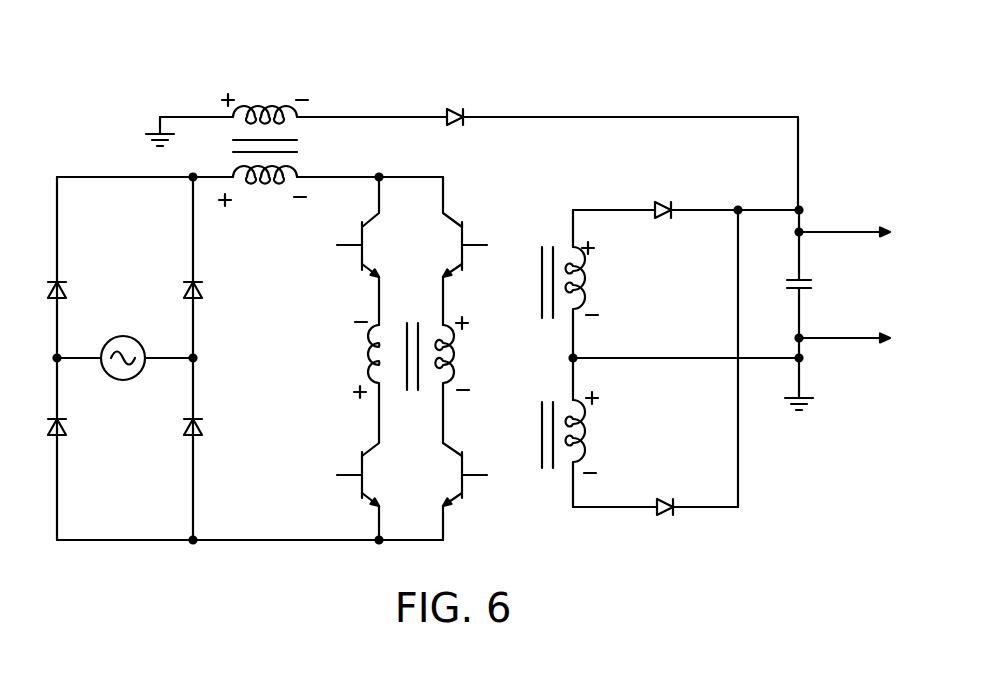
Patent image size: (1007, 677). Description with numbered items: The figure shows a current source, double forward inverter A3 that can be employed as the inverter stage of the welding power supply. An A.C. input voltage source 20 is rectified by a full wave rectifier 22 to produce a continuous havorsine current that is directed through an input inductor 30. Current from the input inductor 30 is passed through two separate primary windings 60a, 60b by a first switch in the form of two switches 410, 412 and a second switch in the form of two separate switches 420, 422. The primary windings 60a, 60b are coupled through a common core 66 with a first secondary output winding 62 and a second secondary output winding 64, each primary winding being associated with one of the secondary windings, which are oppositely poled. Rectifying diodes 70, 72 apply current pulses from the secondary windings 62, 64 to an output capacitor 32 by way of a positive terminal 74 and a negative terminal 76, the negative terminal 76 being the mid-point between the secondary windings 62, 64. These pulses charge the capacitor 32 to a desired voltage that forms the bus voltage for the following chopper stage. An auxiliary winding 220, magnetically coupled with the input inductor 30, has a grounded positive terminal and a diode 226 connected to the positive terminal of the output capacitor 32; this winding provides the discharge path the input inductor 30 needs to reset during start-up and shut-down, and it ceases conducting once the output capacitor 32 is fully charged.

The A.C. input voltage source 20 is at (127, 336).
The full wave rectifier 22 is at (202, 383).
The input inductor 30 is at (252, 180).
The output capacitor 32 is at (813, 285).
The primary winding 60a is at (371, 357).
The primary winding 60b is at (451, 370).
The first secondary output winding 62 is at (581, 297).
The second secondary output winding 64 is at (583, 432).
The common core 66 is at (418, 333).
The rectifying diode 70 is at (661, 203).
The rectifying diode 72 is at (664, 495).
The positive terminal 74 is at (802, 210).
The negative terminal 76 is at (803, 360).
The auxiliary winding 220 is at (268, 112).
The diode 226 is at (459, 108).
The switch 410 is at (358, 257).
The switch 412 is at (356, 465).
The switch 420 is at (455, 215).
The switch 422 is at (469, 484).
The current source, double forward inverter A3 is at (689, 95).